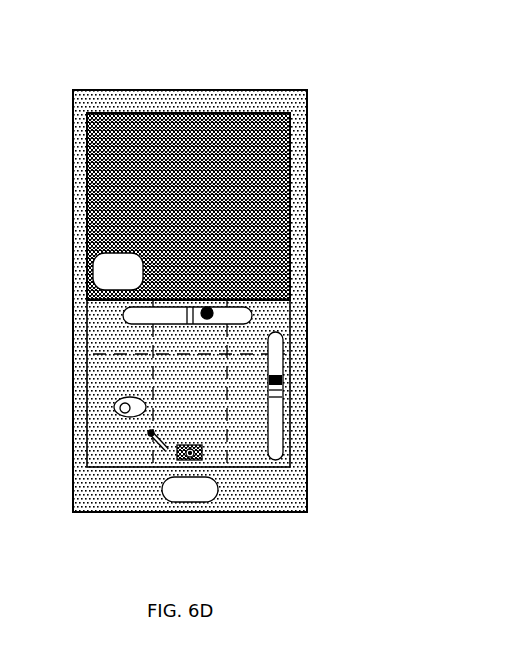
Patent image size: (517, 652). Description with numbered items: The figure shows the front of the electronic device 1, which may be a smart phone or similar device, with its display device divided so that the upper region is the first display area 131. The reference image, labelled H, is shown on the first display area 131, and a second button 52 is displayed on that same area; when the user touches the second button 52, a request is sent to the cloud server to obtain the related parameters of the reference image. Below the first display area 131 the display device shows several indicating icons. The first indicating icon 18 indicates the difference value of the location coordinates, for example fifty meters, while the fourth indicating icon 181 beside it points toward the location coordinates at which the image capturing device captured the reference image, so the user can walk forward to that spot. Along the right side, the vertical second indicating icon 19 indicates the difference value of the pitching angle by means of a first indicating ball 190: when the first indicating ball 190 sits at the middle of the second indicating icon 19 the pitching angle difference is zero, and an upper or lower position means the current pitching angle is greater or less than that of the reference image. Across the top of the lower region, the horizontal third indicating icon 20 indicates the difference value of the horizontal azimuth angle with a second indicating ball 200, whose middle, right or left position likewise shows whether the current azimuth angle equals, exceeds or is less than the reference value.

The electronic device 1 is at (177, 90).
The first display area 131 is at (250, 257).
The second button 52 is at (98, 268).
The second indicating ball 200 is at (208, 307).
The third indicating icon 20 is at (255, 303).
The first indicating ball 190 is at (278, 382).
The second indicating icon 19 is at (283, 417).
The first indicating icon 18 is at (120, 409).
The fourth indicating icon 181 is at (157, 440).